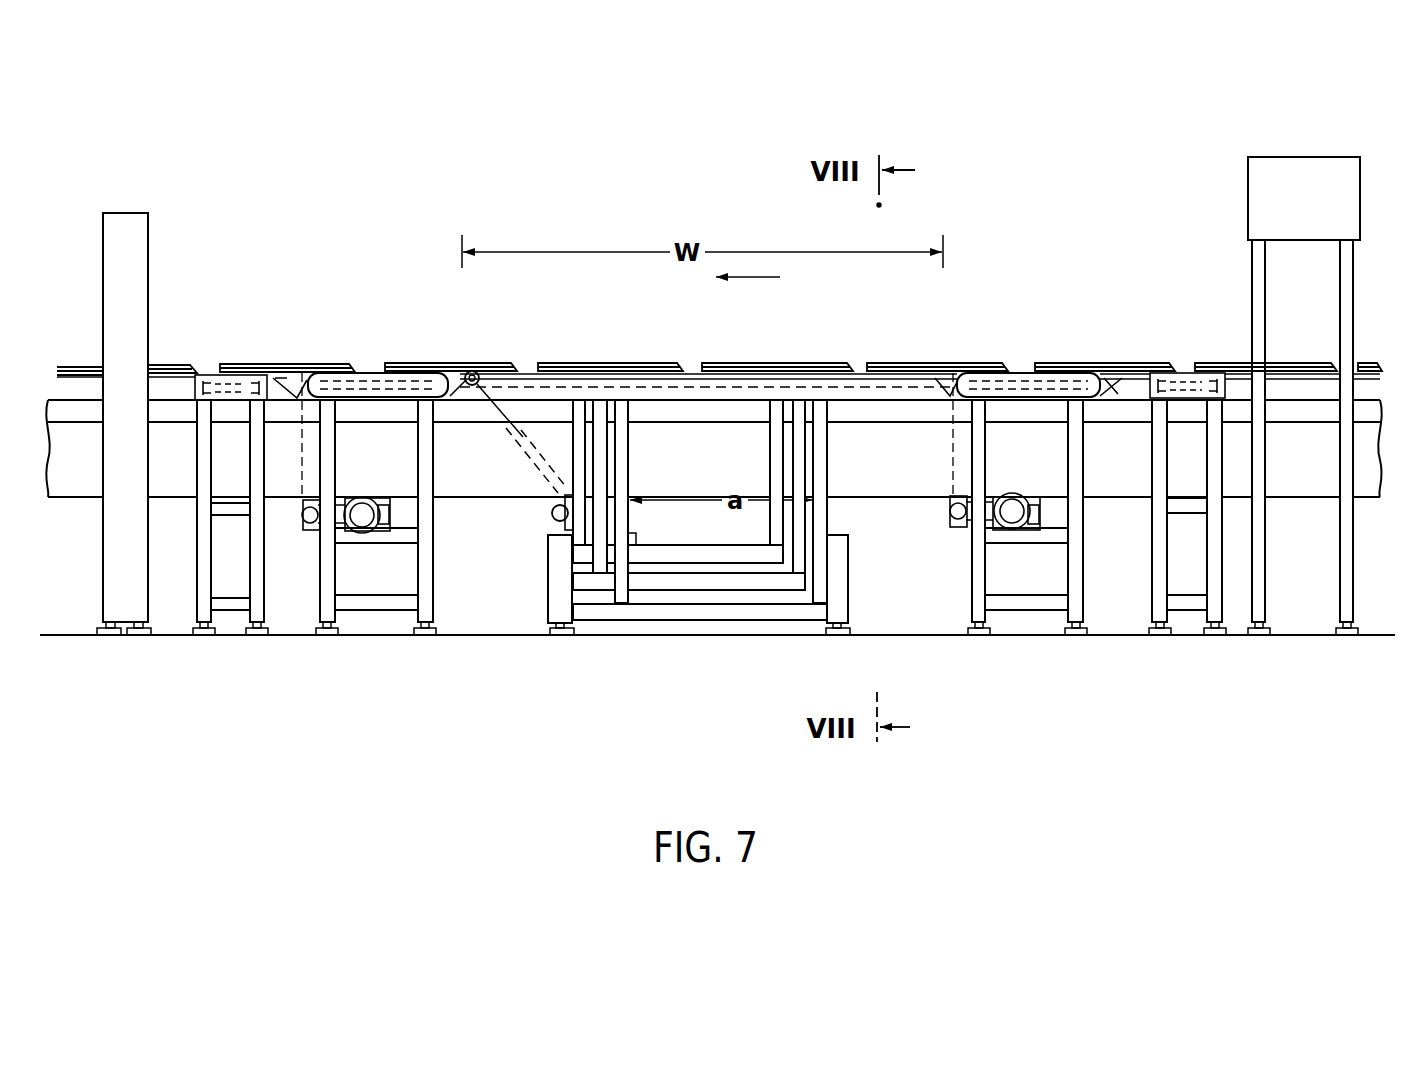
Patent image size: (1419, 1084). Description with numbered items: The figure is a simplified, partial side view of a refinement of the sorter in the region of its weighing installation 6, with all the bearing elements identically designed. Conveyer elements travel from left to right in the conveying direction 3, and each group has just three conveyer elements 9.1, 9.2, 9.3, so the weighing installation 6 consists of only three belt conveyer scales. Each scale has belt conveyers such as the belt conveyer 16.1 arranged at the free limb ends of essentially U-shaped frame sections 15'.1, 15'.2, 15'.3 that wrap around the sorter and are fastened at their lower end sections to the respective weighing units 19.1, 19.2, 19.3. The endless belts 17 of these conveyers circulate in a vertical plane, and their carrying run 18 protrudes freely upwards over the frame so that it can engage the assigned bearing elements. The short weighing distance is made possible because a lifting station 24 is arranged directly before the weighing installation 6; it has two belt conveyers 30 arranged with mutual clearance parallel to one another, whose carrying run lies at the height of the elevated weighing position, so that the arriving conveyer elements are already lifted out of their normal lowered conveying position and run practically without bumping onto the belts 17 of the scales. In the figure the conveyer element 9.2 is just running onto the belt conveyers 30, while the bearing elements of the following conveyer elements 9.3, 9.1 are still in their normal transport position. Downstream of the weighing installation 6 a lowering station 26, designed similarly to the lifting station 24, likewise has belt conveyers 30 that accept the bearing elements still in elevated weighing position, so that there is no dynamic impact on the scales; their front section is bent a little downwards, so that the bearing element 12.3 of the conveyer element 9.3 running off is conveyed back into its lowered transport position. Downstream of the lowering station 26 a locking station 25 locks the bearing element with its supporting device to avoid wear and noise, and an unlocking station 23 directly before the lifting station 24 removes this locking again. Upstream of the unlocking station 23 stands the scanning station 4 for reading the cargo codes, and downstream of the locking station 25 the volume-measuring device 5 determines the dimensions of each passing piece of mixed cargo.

The conveying direction 3 is at (776, 281).
The scanning station 4 is at (1233, 206).
The volume-measuring device 5 is at (152, 296).
The weighing installation 6 is at (545, 566).
The conveyer element 9.1 is at (452, 364).
The conveyer element 9.2 is at (174, 364).
The conveyer element 9.3 is at (269, 364).
The bearing element 12.3 is at (326, 366).
The frame section 15'.1 is at (736, 472).
The frame section 15'.2 is at (747, 486).
The frame section 15'.3 is at (669, 501).
The belt conveyer 16.1 is at (512, 404).
The endless belt 17 is at (531, 368).
The carrying run 18 is at (703, 372).
The weighing unit 19.1 is at (647, 556).
The weighing unit 19.2 is at (653, 580).
The weighing unit 19.3 is at (744, 611).
The unlocking station 23 is at (1185, 622).
The lifting station 24 is at (1016, 622).
The locking station 25 is at (229, 623).
The lowering station 26 is at (373, 622).
The belt conveyer 30 is at (372, 366).